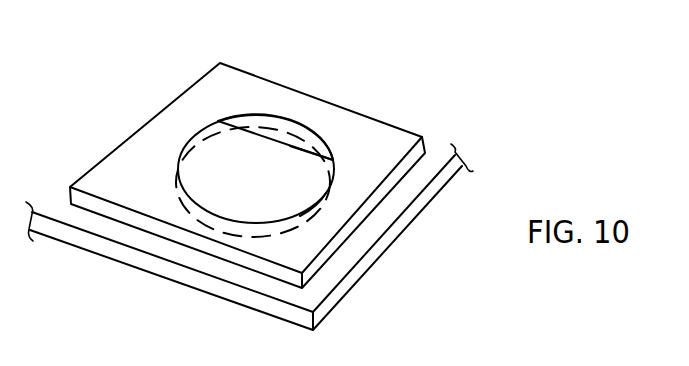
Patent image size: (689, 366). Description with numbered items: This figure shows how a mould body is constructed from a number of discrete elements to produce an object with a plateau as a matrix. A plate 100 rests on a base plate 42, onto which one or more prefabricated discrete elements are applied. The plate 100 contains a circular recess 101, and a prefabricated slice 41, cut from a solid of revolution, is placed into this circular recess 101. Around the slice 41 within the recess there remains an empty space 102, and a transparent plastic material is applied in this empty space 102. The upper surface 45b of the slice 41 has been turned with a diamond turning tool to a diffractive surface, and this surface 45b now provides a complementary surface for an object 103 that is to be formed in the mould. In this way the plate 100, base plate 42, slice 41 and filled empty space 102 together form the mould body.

The plate 100 is at (138, 120).
The base plate 42 is at (133, 242).
The slice 41 is at (267, 184).
The surface 45b is at (246, 128).
The empty space 102 is at (283, 121).
The object 103 is at (325, 127).
The circular recess 101 is at (327, 193).